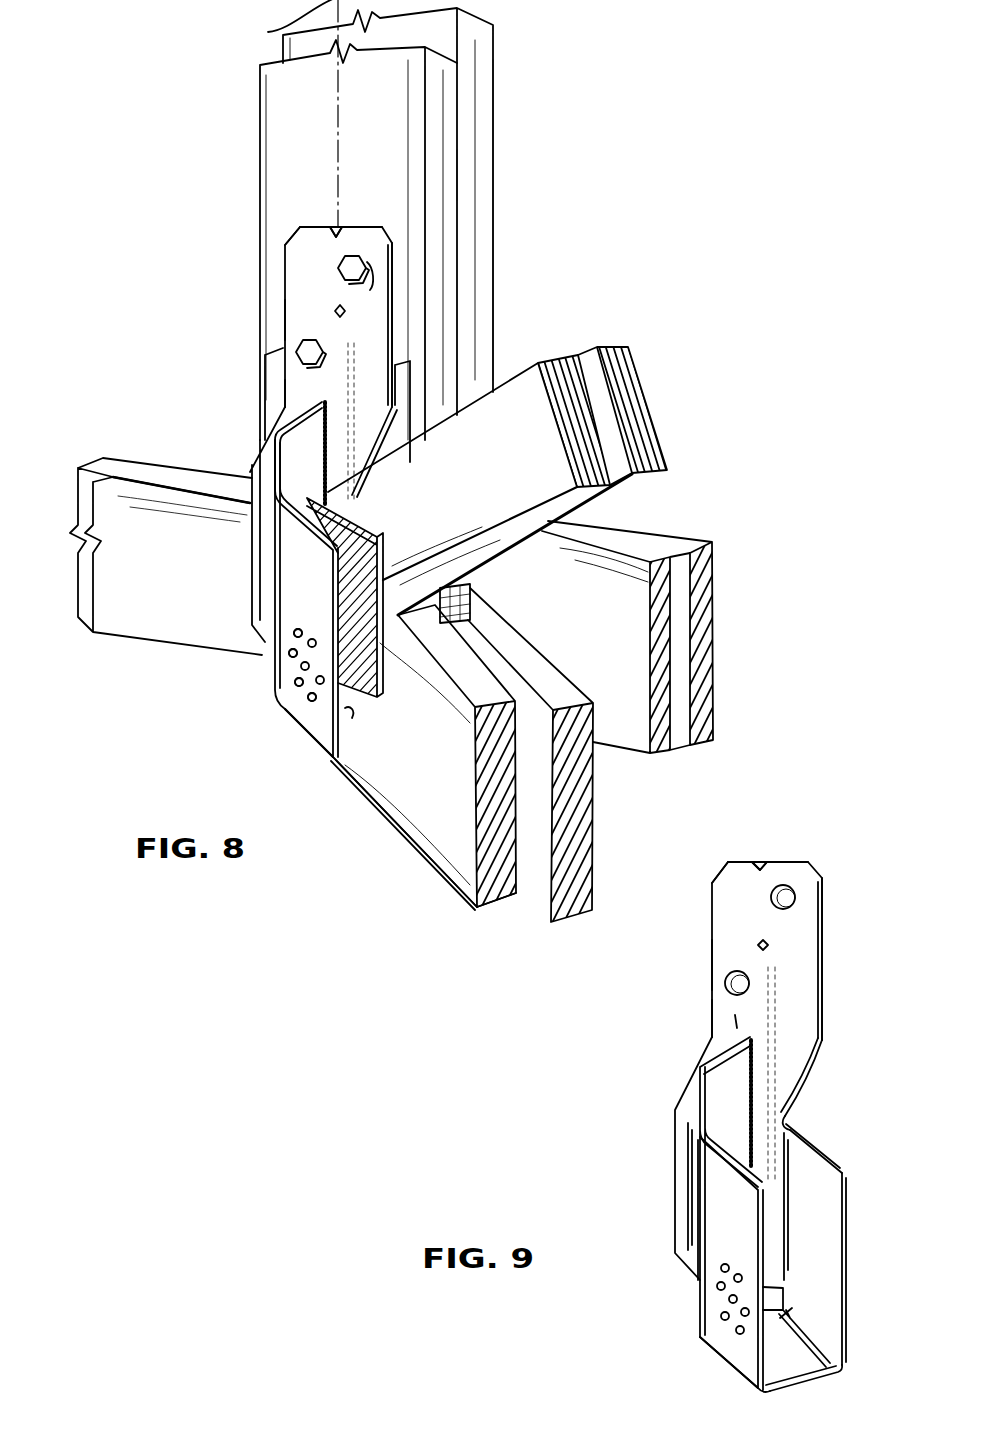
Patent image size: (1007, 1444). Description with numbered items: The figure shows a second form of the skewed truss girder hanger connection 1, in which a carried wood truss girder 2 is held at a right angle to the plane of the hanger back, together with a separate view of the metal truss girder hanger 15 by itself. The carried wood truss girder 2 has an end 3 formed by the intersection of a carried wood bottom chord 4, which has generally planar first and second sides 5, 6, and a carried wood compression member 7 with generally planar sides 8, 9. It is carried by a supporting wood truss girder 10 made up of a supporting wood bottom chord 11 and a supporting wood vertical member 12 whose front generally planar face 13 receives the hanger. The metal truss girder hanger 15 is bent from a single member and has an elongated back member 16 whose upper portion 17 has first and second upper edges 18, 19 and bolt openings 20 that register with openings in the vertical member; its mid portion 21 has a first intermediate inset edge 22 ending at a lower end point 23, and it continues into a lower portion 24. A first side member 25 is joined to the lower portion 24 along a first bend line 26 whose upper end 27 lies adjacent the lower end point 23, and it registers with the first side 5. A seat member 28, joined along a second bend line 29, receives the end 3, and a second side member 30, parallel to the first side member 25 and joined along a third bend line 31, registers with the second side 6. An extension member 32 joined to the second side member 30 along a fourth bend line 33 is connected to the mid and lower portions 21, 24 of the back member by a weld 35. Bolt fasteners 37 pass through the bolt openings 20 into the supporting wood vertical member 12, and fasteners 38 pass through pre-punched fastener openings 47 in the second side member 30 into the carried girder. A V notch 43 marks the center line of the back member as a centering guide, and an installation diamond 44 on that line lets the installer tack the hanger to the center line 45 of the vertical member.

In FIG. 8, the truss girder hanger connection 1 is at (540, 181).
In FIG. 8, the carried wood truss girder 2 is at (413, 850).
In FIG. 8, the end 3 is at (336, 744).
In FIG. 8, the carried wood bottom chord 4 is at (498, 908).
In FIG. 8, the first side 5 is at (596, 792).
In FIG. 8, the second side 6 is at (430, 794).
In FIG. 8, the carried wood compression member 7 is at (554, 362).
In FIG. 8, the side 8 is at (648, 402).
In FIG. 8, the side 9 is at (514, 464).
In FIG. 8, the supporting wood truss girder 10 is at (499, 302).
In FIG. 8, the supporting wood bottom chord 11 is at (717, 612).
In FIG. 8, the supporting wood vertical member 12 is at (460, 62).
In FIG. 8, the front generally planar face 13 is at (312, 106).
In FIG. 8, the metal truss girder hanger 15 is at (366, 226).
In FIG. 9, the metal truss girder hanger 15 is at (797, 859).
In FIG. 8, the elongated back member 16 is at (281, 249).
In FIG. 9, the elongated back member 16 is at (709, 889).
In FIG. 8, the upper portion 17 is at (299, 283).
In FIG. 9, the upper portion 17 is at (732, 912).
In FIG. 8, the first upper edge 18 is at (393, 268).
In FIG. 9, the first upper edge 18 is at (823, 905).
In FIG. 8, the second upper edge 19 is at (285, 318).
In FIG. 9, the second upper edge 19 is at (710, 963).
In FIG. 9, the bolt openings 20 is at (743, 982).
In FIG. 8, the mid portion 21 is at (297, 388).
In FIG. 9, the mid portion 21 is at (735, 1015).
In FIG. 8, the first intermediate inset edge 22 is at (391, 408).
In FIG. 9, the first intermediate inset edge 22 is at (822, 1062).
In FIG. 9, the lower end point 23 is at (795, 1125).
In FIG. 8, the lower portion 24 is at (262, 562).
In FIG. 9, the lower portion 24 is at (684, 1220).
In FIG. 9, the first side member 25 is at (845, 1225).
In FIG. 9, the first bend line 26 is at (787, 1225).
In FIG. 9, the upper end 27 is at (787, 1103).
In FIG. 9, the seat member 28 is at (805, 1376).
In FIG. 9, the second bend line 29 is at (790, 1318).
In FIG. 8, the second side member 30 is at (315, 604).
In FIG. 9, the second side member 30 is at (745, 1236).
In FIG. 9, the third bend line 31 is at (717, 1355).
In FIG. 8, the extension member 32 is at (315, 476).
In FIG. 9, the extension member 32 is at (745, 1111).
In FIG. 9, the fourth bend line 33 is at (698, 1162).
In FIG. 8, the weld 35 is at (328, 470).
In FIG. 9, the weld 35 is at (756, 1062).
In FIG. 8, the bolt fasteners 37 is at (326, 347).
In FIG. 8, the fasteners 38 is at (293, 633).
In FIG. 8, the V notch 43 is at (339, 226).
In FIG. 9, the V notch 43 is at (760, 862).
In FIG. 8, the installation diamond 44 is at (337, 304).
In FIG. 9, the installation diamond 44 is at (762, 940).
In FIG. 8, the center line 45 is at (268, 32).
In FIG. 8, the pre-punched fastener openings 47 is at (320, 686).
In FIG. 9, the pre-punched fastener openings 47 is at (736, 1331).